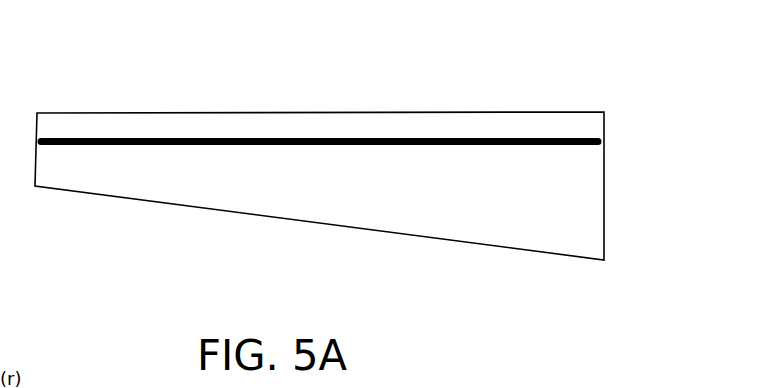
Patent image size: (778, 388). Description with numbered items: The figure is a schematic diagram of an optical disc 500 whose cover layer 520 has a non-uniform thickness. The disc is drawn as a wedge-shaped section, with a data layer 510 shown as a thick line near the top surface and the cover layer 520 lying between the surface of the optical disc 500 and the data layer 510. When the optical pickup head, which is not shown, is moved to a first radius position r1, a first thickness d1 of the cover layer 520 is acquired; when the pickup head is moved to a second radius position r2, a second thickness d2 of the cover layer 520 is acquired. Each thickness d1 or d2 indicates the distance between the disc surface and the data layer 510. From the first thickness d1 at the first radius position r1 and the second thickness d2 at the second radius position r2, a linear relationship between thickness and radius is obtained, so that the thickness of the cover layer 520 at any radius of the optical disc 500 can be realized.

The optical disc 500 is at (489, 86).
The data layer 510 is at (558, 137).
The cover layer 520 is at (597, 224).
The first thickness d1 is at (88, 149).
The second thickness d2 is at (532, 148).
The first radius position r1 is at (88, 224).
The second radius position r2 is at (533, 262).